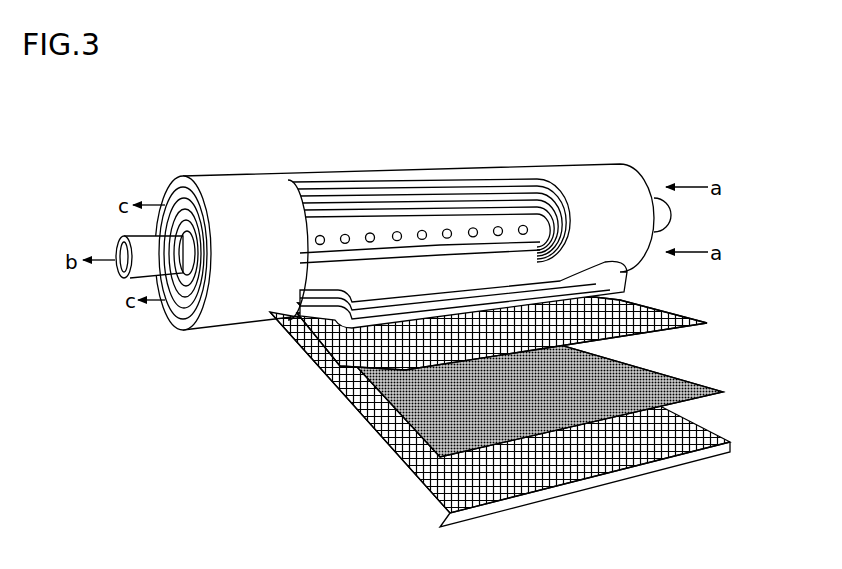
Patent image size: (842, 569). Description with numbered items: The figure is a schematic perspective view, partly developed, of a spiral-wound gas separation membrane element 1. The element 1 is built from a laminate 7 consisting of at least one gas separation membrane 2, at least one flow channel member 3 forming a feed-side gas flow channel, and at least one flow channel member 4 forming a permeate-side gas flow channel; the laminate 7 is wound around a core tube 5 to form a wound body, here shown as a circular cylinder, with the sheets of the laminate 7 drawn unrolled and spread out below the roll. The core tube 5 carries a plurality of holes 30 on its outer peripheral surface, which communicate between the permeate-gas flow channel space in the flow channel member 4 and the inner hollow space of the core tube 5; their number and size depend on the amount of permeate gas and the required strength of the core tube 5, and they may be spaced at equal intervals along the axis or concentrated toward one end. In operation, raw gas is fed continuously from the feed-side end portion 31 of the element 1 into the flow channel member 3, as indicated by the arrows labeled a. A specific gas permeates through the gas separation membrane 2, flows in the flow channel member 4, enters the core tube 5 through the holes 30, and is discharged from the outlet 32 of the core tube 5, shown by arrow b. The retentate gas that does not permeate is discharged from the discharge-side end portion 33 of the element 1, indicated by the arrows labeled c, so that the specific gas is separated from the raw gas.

The gas separation membrane element 1 is at (382, 240).
The gas separation membrane 2 is at (668, 382).
The flow channel member forming a feed-side gas flow channel 3 is at (712, 430).
The flow channel member forming a permeate-side gas flow channel 4 is at (504, 318).
The core tube 5 is at (360, 222).
The laminate 7 is at (526, 394).
The holes 30 is at (345, 233).
The feed-side end portion 31 is at (654, 172).
The outlet 32 is at (108, 243).
The discharge-side end portion 33 is at (129, 296).